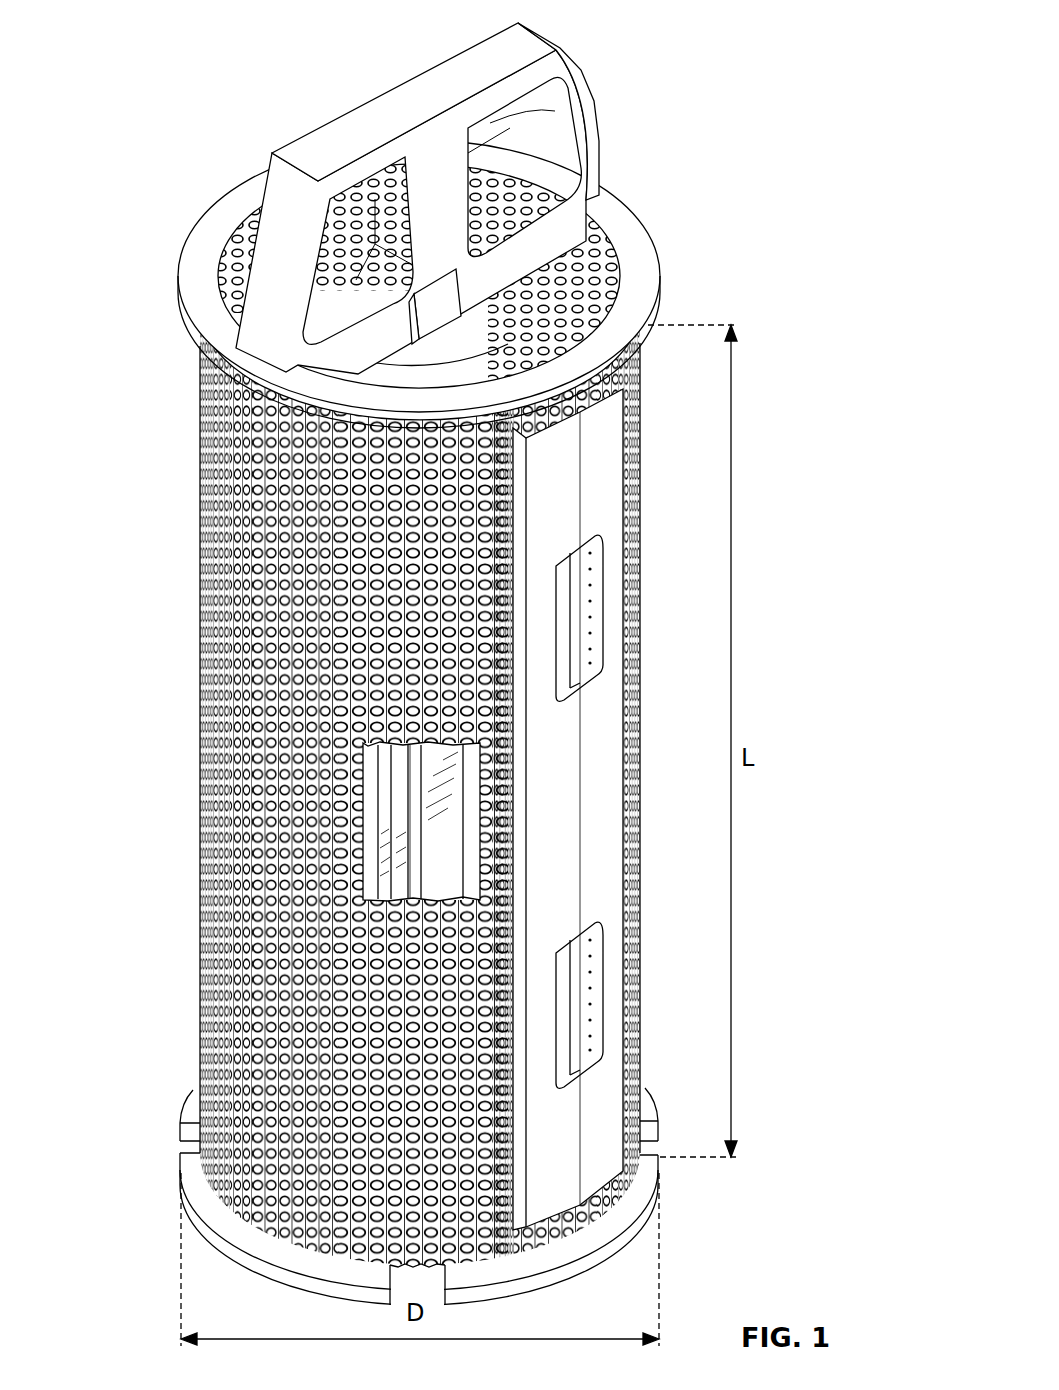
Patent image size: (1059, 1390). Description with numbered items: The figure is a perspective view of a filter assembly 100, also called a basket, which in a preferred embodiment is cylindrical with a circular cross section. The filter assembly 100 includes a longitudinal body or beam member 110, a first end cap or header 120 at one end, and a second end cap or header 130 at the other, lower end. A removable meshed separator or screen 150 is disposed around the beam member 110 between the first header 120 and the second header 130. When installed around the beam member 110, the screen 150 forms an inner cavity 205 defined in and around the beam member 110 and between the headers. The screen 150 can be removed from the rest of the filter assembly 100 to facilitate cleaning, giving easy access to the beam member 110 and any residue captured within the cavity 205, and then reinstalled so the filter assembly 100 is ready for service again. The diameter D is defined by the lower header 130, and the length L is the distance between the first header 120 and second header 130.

The filter assembly 100 is at (757, 32).
The beam member 110 is at (368, 815).
The first header 120 is at (216, 184).
The second header 130 is at (190, 1193).
The screen 150 is at (206, 936).
The inner cavity 205 is at (550, 248).